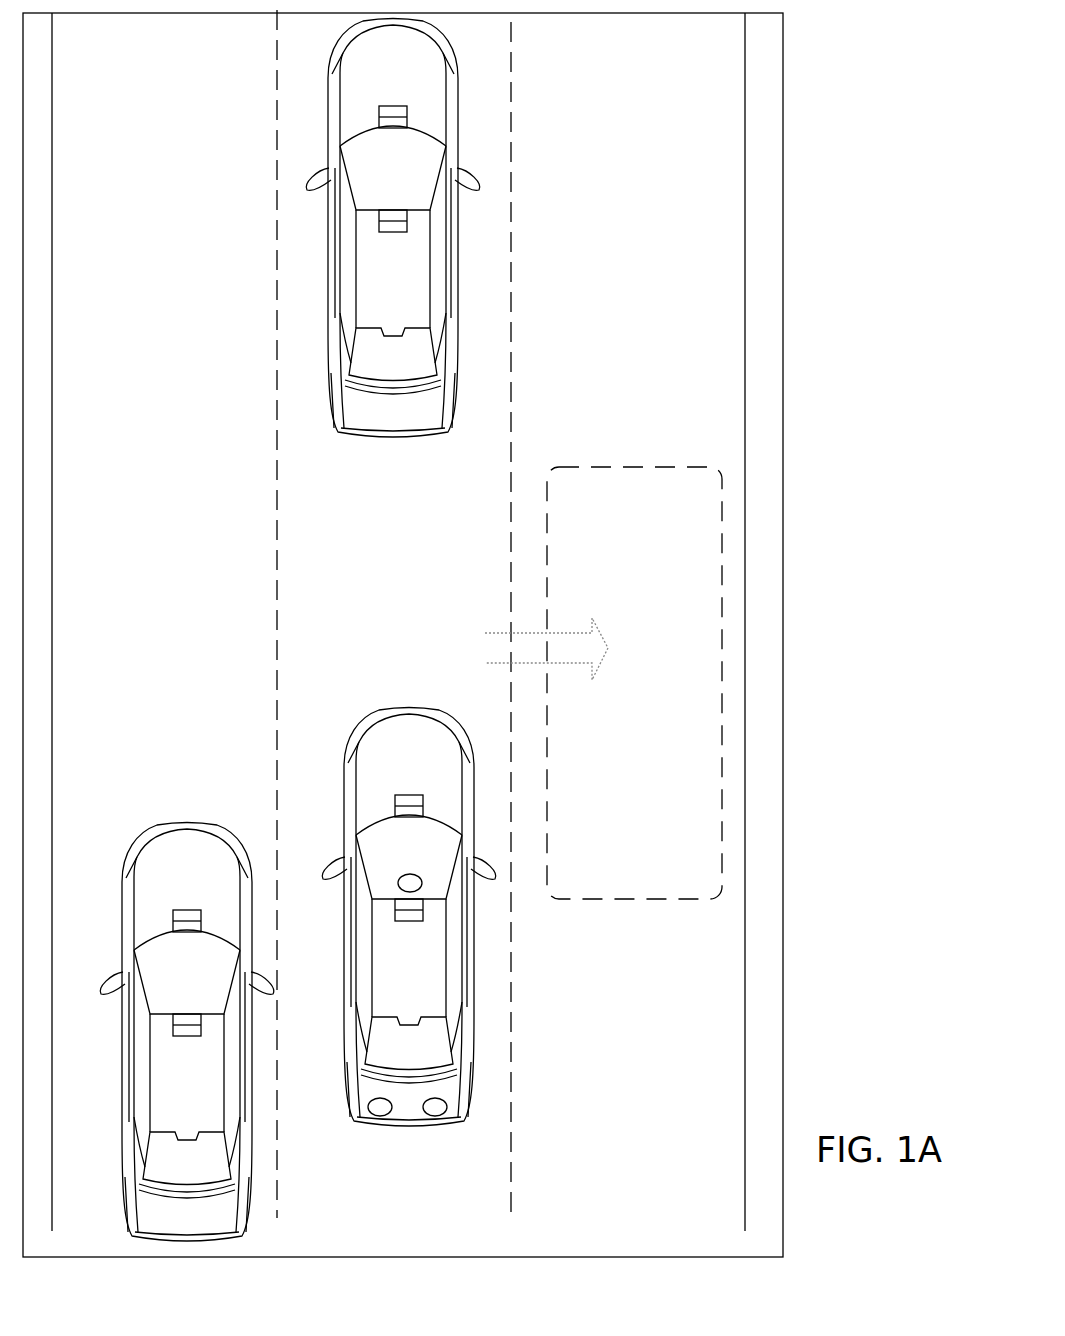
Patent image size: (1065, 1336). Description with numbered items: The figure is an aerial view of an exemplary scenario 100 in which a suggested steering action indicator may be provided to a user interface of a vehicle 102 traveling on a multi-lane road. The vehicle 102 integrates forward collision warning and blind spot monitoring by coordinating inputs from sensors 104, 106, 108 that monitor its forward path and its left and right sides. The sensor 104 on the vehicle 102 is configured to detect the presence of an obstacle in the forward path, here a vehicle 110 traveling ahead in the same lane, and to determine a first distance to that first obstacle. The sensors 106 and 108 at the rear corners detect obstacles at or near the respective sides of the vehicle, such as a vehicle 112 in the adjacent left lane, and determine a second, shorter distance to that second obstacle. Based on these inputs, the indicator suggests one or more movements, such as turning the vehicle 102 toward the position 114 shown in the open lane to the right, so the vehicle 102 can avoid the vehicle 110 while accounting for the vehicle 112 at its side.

The exemplary scenario 100 is at (403, 633).
The vehicle 102 is at (408, 943).
The sensor 104 is at (421, 875).
The sensor 106 is at (380, 1114).
The sensor 108 is at (435, 1114).
The vehicle 110 is at (392, 228).
The vehicle 112 is at (186, 1032).
The position 114 is at (594, 467).